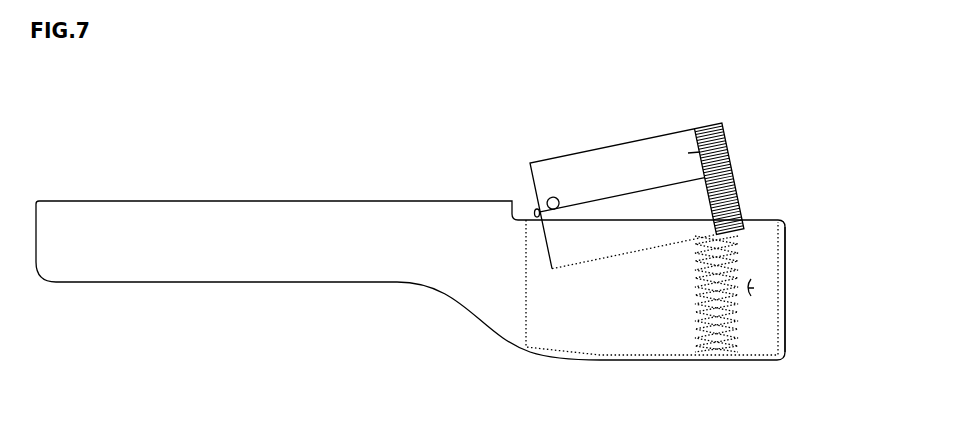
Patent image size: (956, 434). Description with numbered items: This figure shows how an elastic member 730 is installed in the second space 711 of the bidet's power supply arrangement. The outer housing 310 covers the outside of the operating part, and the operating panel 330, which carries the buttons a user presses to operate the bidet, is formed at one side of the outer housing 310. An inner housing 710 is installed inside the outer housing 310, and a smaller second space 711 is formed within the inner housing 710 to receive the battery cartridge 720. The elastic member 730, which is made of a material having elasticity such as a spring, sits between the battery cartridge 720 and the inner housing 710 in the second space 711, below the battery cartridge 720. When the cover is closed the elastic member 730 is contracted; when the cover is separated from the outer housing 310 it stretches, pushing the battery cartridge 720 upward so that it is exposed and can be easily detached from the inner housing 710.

The operating panel 330 is at (290, 215).
The outer housing 310 is at (787, 250).
The inner housing 710 is at (778, 323).
The second space 711 is at (754, 288).
The battery cartridge 720 is at (597, 152).
The elastic member 730 is at (707, 347).